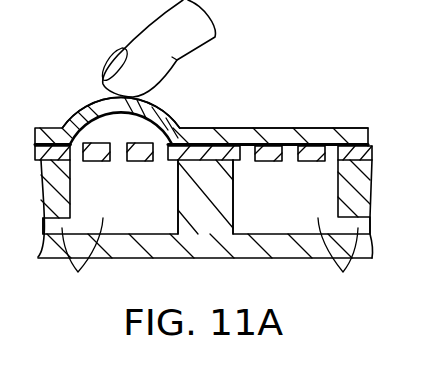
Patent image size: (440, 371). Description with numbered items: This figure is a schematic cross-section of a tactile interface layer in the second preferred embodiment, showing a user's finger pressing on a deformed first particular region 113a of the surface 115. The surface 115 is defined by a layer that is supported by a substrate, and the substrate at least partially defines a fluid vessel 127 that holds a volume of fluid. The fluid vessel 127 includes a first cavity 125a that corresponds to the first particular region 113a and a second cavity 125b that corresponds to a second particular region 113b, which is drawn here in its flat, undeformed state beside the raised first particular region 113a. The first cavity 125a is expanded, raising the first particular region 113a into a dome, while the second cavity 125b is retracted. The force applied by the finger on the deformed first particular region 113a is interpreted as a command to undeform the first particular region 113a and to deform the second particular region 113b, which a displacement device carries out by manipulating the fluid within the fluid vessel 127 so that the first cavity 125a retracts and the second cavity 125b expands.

The first particular region 113a is at (99, 95).
The second particular region 113b is at (295, 124).
The surface 115 is at (220, 127).
The first cavity 125a is at (147, 202).
The second cavity 125b is at (317, 201).
The fluid vessel 127 is at (210, 262).